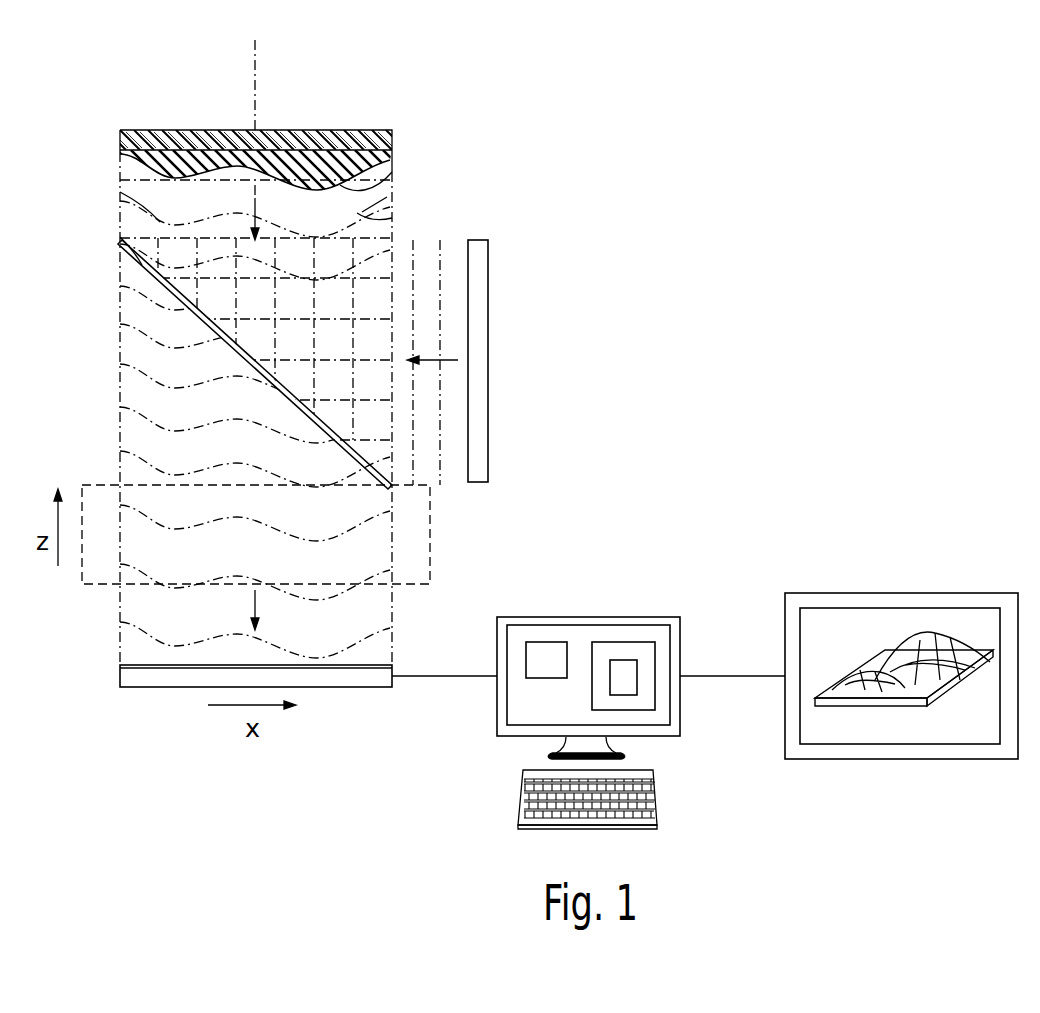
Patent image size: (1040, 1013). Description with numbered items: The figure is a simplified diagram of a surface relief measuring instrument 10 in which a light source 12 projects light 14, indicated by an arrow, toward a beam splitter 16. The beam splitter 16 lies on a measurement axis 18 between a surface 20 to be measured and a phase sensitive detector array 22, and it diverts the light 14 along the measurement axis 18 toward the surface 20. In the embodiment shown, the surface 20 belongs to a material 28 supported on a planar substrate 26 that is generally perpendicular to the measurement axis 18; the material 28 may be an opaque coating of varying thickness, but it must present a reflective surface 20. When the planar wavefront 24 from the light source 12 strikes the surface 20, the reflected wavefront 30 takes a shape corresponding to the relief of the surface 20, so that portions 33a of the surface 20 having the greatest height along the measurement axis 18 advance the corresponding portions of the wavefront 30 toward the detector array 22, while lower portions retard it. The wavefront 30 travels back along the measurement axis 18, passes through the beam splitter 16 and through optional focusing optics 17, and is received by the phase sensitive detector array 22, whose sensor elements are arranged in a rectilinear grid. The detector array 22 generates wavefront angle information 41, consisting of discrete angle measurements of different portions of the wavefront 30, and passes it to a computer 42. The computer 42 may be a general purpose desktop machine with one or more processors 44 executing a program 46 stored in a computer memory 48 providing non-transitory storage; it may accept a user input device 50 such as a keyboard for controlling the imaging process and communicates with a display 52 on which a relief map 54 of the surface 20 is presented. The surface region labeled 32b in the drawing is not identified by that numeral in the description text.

The surface relief measuring instrument 10 is at (478, 70).
The light source 12 is at (489, 420).
The light 14 is at (448, 360).
The beam splitter 16 is at (147, 262).
The focusing optics 17 is at (432, 543).
The measurement axis 18 is at (257, 67).
The surface 20 is at (157, 182).
The phase sensitive detector array 22 is at (158, 688).
The planar wavefront 24 is at (392, 220).
The planar substrate 26 is at (125, 148).
The material 28 is at (163, 166).
The reflected wavefront 30 is at (157, 228).
The interface surface 32b is at (227, 166).
The portions of the surface having the greatest relief 33a is at (345, 187).
The wavefront angle information 41 is at (444, 680).
The computer 42 is at (682, 645).
The processor 44 is at (557, 642).
The program 46 is at (638, 683).
The computer memory 48 is at (640, 642).
The user input device 50 is at (658, 803).
The display 52 is at (843, 593).
The relief map 54 is at (940, 635).